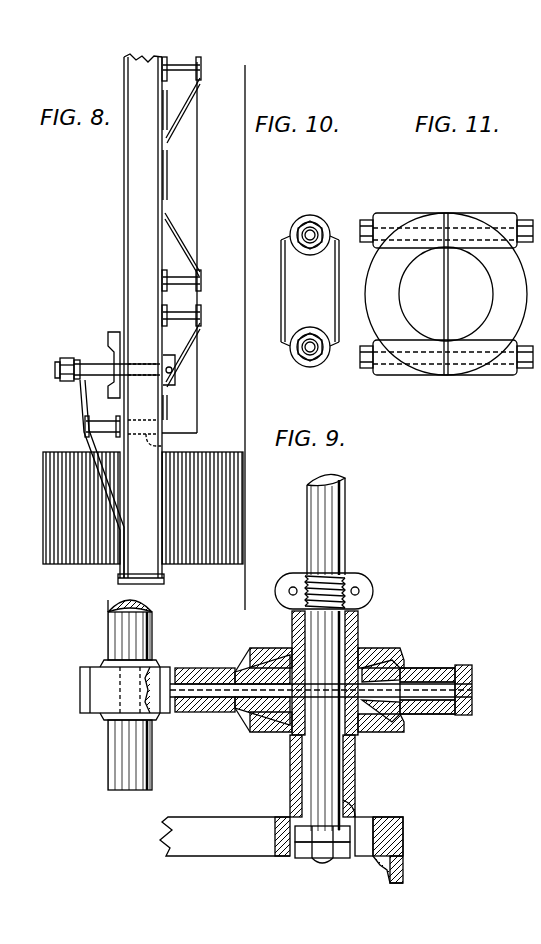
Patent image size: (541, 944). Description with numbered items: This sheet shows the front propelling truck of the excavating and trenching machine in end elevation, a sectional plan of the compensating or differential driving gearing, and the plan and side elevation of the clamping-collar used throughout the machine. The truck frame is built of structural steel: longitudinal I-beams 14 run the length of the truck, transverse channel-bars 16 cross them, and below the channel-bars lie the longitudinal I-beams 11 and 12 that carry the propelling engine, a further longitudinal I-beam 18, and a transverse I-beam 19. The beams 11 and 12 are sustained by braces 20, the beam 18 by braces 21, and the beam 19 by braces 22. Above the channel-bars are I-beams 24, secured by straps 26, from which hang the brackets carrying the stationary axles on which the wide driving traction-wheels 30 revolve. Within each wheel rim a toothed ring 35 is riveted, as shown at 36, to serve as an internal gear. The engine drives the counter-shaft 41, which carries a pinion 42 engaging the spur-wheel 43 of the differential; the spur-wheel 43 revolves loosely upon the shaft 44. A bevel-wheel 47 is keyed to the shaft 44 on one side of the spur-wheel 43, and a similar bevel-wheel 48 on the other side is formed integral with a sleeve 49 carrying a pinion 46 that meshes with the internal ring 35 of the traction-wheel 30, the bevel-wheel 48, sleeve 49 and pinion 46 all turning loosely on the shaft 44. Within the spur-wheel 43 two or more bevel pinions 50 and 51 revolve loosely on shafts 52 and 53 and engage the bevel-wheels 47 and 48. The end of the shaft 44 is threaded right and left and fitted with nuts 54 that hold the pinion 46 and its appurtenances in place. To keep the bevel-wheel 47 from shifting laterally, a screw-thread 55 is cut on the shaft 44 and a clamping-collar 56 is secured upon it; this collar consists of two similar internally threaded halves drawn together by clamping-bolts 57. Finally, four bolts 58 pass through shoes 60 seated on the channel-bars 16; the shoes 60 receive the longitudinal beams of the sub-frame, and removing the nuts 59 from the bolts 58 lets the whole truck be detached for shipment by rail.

In FIG. 8, the longitudinal I-beam 11 is at (181, 277).
In FIG. 8, the longitudinal I-beam 12 is at (179, 322).
In FIG. 8, the longitudinal I-beam 14 is at (148, 582).
In FIG. 8, the transverse channel-bar 16 is at (143, 316).
In FIG. 8, the longitudinal I-beam 18 is at (181, 75).
In FIG. 8, the transverse I-beam 19 is at (197, 190).
In FIG. 8, the braces 20 is at (183, 235).
In FIG. 8, the braces 21 is at (183, 126).
In FIG. 8, the braces 22 is at (162, 446).
In FIG. 8, the I-beam 24 is at (102, 417).
In FIG. 8, the straps 26 is at (80, 405).
In FIG. 8, the driving traction-wheel 30 is at (154, 508).
In FIG. 9, the driving traction-wheel 30 is at (403, 836).
In FIG. 9, the toothed ring 35 is at (225, 836).
In FIG. 9, the rivets 36 is at (383, 873).
In FIG. 9, the counter-shaft 41 is at (108, 766).
In FIG. 9, the pinion 42 is at (80, 692).
In FIG. 9, the spur-wheel 43 is at (458, 716).
In FIG. 9, the shaft 44 is at (345, 522).
In FIG. 9, the pinion 46 is at (375, 804).
In FIG. 9, the bevel-wheel 47 is at (390, 650).
In FIG. 9, the bevel-wheel 48 is at (382, 734).
In FIG. 9, the sleeve 49 is at (356, 768).
In FIG. 9, the bevel pinion 50 is at (230, 670).
In FIG. 9, the bevel pinion 51 is at (420, 670).
In FIG. 9, the shaft 52 is at (222, 714).
In FIG. 9, the shaft 53 is at (425, 716).
In FIG. 9, the nuts 54 is at (300, 860).
In FIG. 9, the screw-thread 55 is at (345, 580).
In FIG. 9, the clamping-collar 56 is at (368, 596).
In FIG. 10, the clamping-collar 56 is at (310, 314).
In FIG. 11, the clamping-collar 56 is at (446, 304).
In FIG. 10, the clamping-bolts 57 is at (323, 222).
In FIG. 11, the clamping-bolts 57 is at (446, 294).
In FIG. 8, the bolts 58 is at (87, 364).
In FIG. 8, the nuts 59 is at (60, 380).
In FIG. 8, the shoes 60 is at (110, 340).